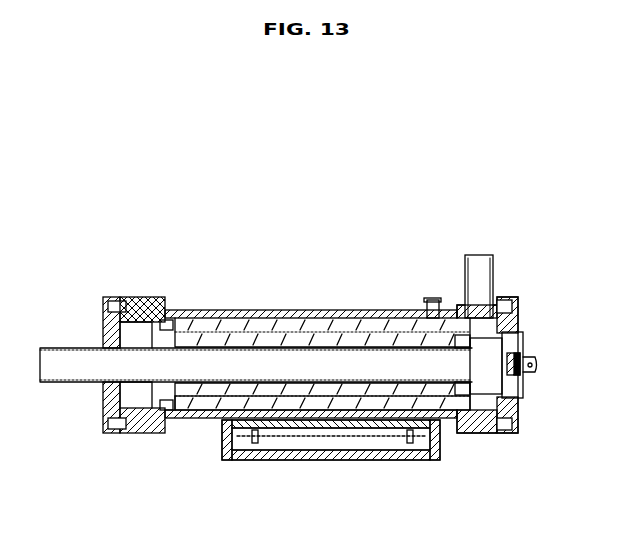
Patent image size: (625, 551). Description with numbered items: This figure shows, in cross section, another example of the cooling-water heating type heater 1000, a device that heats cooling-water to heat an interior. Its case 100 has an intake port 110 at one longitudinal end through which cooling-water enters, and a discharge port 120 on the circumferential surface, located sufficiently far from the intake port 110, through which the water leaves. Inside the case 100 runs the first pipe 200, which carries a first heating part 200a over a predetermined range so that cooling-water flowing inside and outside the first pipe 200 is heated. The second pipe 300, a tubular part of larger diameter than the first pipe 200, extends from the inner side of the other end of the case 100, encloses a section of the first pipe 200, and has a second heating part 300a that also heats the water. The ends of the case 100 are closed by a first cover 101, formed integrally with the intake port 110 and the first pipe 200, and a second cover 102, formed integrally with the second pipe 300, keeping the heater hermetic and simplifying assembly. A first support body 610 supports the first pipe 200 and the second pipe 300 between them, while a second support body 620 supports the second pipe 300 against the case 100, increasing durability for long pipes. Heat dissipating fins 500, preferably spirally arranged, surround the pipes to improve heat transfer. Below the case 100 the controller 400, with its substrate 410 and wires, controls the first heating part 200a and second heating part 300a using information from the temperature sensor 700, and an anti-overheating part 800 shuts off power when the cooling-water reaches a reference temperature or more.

The cooling-water heating type heater 1000 is at (130, 160).
The case 100 is at (267, 290).
The first cover 101 is at (102, 322).
The second cover 102 is at (518, 415).
The intake port 110 is at (66, 347).
The discharge port 120 is at (493, 255).
The first pipe 200 is at (322, 335).
The first heating part 200a is at (306, 318).
The second pipe 300 is at (468, 400).
The second heating part 300a is at (197, 405).
The controller 400 is at (298, 467).
The substrate 410 is at (365, 438).
The heat dissipating fins 500 is at (140, 300).
The first support body 610 is at (185, 318).
The second support body 620 is at (473, 342).
The temperature sensor 700 is at (432, 298).
The anti-overheating part 800 is at (527, 370).